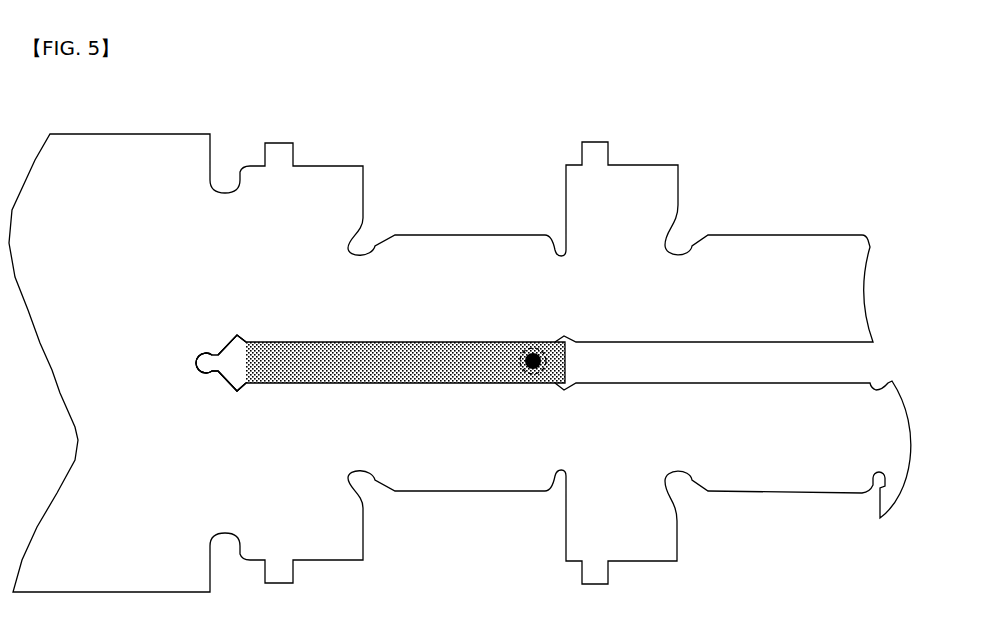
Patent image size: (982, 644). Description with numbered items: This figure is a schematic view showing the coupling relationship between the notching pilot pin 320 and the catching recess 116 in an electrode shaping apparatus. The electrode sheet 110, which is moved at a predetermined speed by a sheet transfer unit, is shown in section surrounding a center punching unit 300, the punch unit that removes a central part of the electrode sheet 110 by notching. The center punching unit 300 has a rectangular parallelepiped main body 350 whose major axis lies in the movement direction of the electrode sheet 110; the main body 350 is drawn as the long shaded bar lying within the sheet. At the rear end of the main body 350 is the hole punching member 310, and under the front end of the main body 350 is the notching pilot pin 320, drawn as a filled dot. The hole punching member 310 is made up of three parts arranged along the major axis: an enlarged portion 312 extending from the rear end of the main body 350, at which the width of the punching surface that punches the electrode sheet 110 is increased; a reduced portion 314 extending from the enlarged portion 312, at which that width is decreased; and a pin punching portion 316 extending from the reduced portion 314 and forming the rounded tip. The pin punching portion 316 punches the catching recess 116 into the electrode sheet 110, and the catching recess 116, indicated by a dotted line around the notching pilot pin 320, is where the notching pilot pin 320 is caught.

The electrode sheet 110 is at (460, 363).
The catching recess 116 is at (520, 345).
The center punching unit 300 is at (380, 347).
The hole punching member 310 is at (193, 398).
The enlarged portion 312 is at (253, 325).
The reduced portion 314 is at (224, 389).
The pin punching portion 316 is at (197, 349).
The notching pilot pin 320 is at (533, 370).
The main body 350 is at (405, 362).